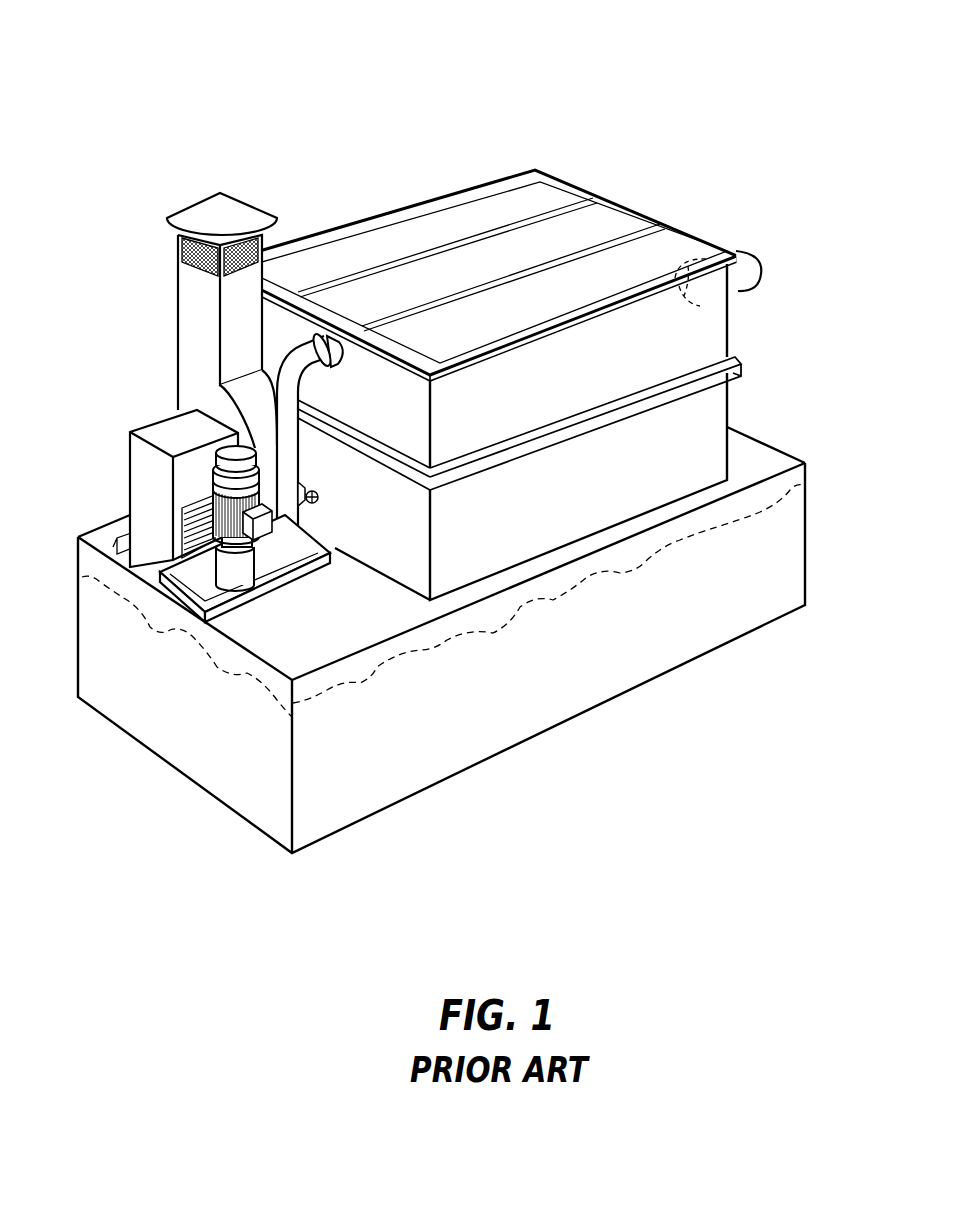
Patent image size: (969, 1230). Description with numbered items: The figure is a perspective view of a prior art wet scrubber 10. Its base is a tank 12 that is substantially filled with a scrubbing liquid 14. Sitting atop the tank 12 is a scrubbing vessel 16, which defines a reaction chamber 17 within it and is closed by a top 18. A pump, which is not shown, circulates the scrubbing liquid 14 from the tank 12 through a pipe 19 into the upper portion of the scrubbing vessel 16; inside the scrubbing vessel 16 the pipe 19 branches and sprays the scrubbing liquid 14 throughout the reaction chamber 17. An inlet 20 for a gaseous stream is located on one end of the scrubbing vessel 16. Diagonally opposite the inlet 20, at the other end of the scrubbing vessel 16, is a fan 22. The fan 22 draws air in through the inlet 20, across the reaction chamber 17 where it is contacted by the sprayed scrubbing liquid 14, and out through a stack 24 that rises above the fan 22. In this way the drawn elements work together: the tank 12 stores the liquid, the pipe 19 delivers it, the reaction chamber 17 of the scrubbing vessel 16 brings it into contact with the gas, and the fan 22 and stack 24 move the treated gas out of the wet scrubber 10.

The wet scrubber 10 is at (352, 122).
The tank 12 is at (110, 536).
The scrubbing liquid 14 is at (490, 633).
The scrubbing vessel 16 is at (738, 318).
The reaction chamber 17 is at (657, 412).
The top 18 is at (538, 190).
The pipe 19 is at (323, 560).
The inlet 20 is at (746, 249).
The fan 22 is at (204, 406).
The stack 24 is at (196, 302).